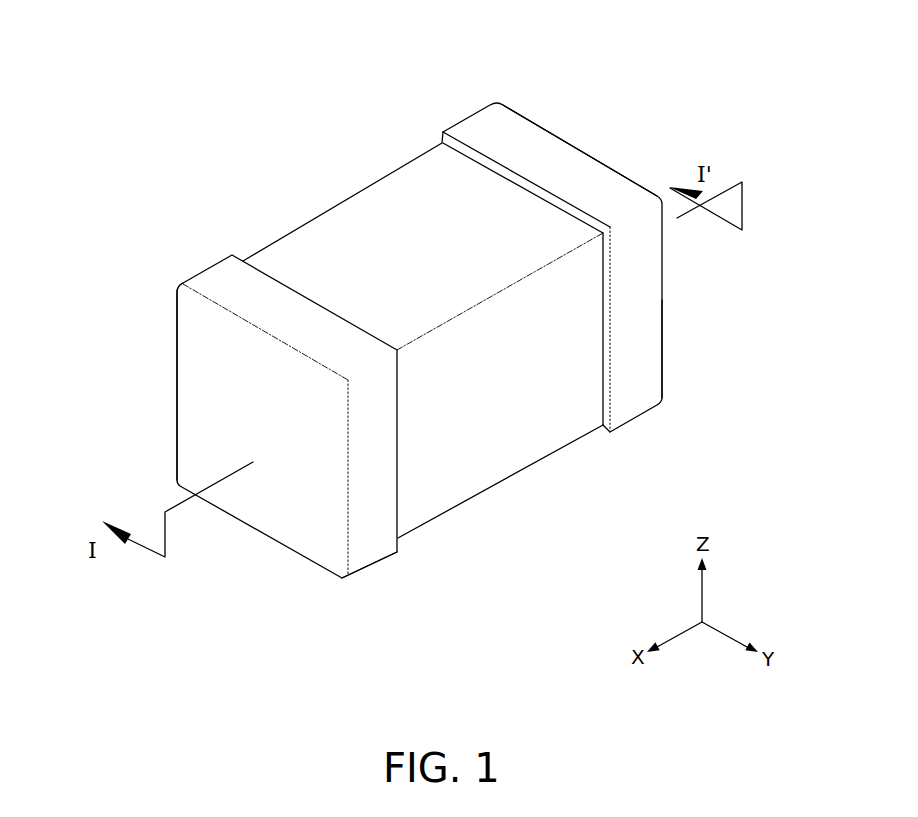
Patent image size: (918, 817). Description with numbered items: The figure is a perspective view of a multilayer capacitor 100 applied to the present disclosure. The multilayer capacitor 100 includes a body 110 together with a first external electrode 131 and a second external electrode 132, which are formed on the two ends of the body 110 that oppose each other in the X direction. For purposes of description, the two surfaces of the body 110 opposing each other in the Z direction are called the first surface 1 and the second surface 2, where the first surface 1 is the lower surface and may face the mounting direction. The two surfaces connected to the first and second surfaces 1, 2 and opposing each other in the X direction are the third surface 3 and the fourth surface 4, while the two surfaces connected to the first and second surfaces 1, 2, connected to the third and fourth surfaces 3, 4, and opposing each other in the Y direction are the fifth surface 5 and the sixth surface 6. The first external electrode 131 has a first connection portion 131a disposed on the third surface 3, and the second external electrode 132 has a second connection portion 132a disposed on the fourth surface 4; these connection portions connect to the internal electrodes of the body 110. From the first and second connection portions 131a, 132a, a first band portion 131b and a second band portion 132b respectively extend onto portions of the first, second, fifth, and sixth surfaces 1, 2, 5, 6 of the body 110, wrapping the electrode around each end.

The multilayer capacitor 100 is at (405, 37).
The body 110 is at (457, 344).
The first surface 1 is at (448, 478).
The second surface 2 is at (394, 195).
The third surface 3 is at (208, 408).
The fourth surface 4 is at (565, 180).
The fifth surface 5 is at (535, 445).
The sixth surface 6 is at (306, 244).
The first external electrode 131 is at (243, 467).
The first connection portion 131a is at (297, 535).
The first band portion 131b is at (373, 523).
The second external electrode 132 is at (641, 248).
The second connection portion 132a is at (650, 305).
The second band portion 132b is at (650, 370).